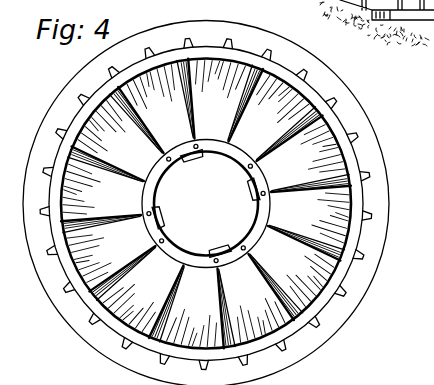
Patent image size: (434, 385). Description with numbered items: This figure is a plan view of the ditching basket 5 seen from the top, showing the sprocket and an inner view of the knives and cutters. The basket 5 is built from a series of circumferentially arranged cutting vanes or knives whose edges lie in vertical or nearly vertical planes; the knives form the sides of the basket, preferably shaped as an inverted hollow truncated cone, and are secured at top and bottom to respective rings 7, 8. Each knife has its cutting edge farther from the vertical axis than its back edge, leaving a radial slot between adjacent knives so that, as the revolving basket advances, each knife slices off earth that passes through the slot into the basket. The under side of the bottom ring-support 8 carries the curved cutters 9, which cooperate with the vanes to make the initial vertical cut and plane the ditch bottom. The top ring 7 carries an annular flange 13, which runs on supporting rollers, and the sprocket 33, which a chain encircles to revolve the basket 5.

The basket 5 is at (206, 203).
The ring 7 is at (345, 262).
The bottom ring-support 8 is at (254, 221).
The curved cutters 9 is at (191, 158).
The annular flange 13 is at (350, 312).
The sprocket 33 is at (88, 324).